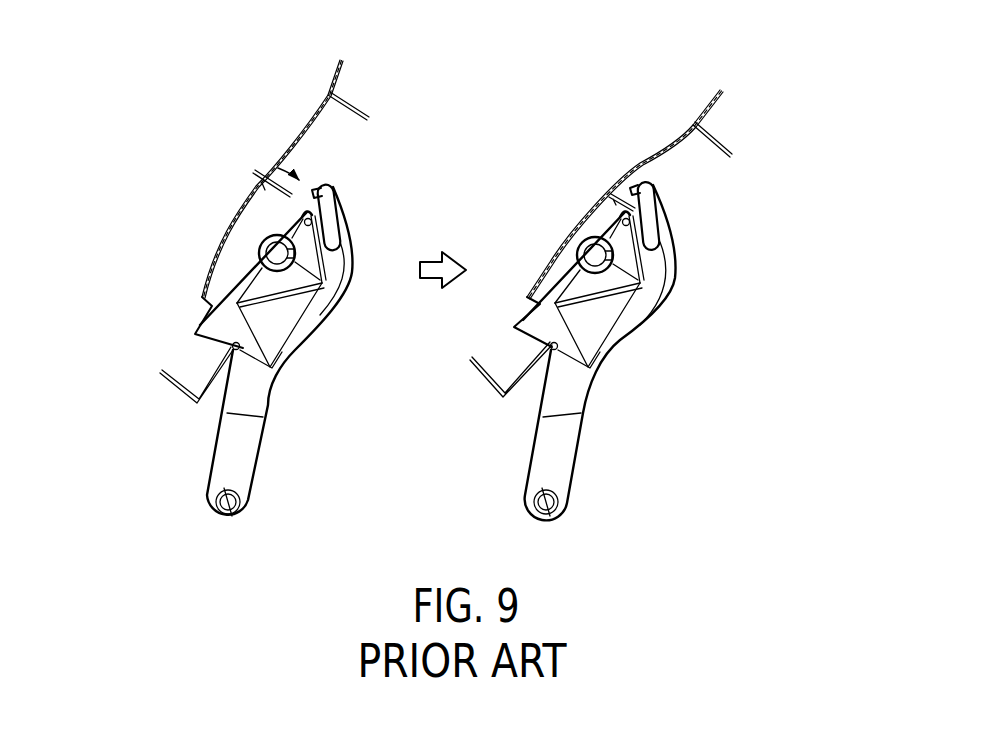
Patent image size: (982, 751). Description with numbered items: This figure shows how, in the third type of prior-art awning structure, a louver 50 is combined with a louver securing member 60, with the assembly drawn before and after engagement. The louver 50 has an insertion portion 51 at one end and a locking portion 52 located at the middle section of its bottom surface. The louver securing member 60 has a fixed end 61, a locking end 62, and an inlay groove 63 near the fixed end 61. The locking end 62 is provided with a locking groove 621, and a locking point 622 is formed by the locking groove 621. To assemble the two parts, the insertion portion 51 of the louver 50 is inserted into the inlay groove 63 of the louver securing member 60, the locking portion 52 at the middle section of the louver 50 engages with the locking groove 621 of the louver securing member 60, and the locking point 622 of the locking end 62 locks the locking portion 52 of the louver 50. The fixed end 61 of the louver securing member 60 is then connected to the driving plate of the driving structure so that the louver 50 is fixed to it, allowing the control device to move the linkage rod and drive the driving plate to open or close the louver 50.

The louver 50 is at (215, 185).
The insertion portion 51 is at (235, 347).
The locking portion 52 is at (288, 197).
The louver securing member 60 is at (275, 476).
The fixed end 61 is at (227, 515).
The locking end 62 is at (572, 198).
The locking groove 621 is at (329, 226).
The locking point 622 is at (316, 187).
The inlay groove 63 is at (243, 347).